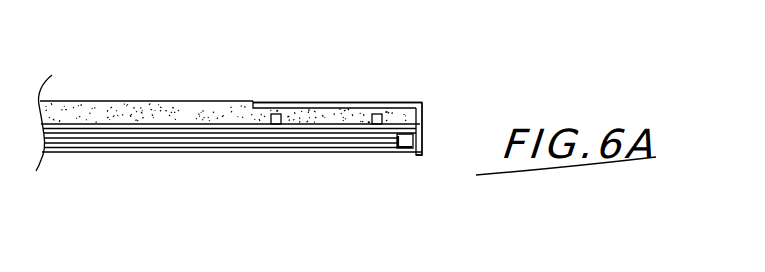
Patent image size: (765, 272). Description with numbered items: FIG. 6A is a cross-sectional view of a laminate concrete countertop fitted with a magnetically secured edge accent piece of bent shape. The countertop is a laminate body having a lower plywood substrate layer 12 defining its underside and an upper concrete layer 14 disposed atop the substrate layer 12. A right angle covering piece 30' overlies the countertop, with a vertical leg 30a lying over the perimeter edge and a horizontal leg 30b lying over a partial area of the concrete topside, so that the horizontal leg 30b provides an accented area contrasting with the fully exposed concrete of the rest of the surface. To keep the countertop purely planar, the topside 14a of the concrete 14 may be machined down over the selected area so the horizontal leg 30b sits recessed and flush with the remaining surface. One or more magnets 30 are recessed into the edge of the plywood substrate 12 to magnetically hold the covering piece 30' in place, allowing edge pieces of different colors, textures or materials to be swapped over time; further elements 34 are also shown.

The substrate layer 12 is at (197, 143).
The concrete layer 14 is at (178, 112).
The topside of the concrete 14a is at (103, 102).
The magnet 30 is at (415, 175).
The right angle covering piece 30' is at (337, 92).
The vertical leg 30a is at (422, 124).
The horizontal leg 30b is at (328, 108).
The fasteners 34 is at (277, 124).